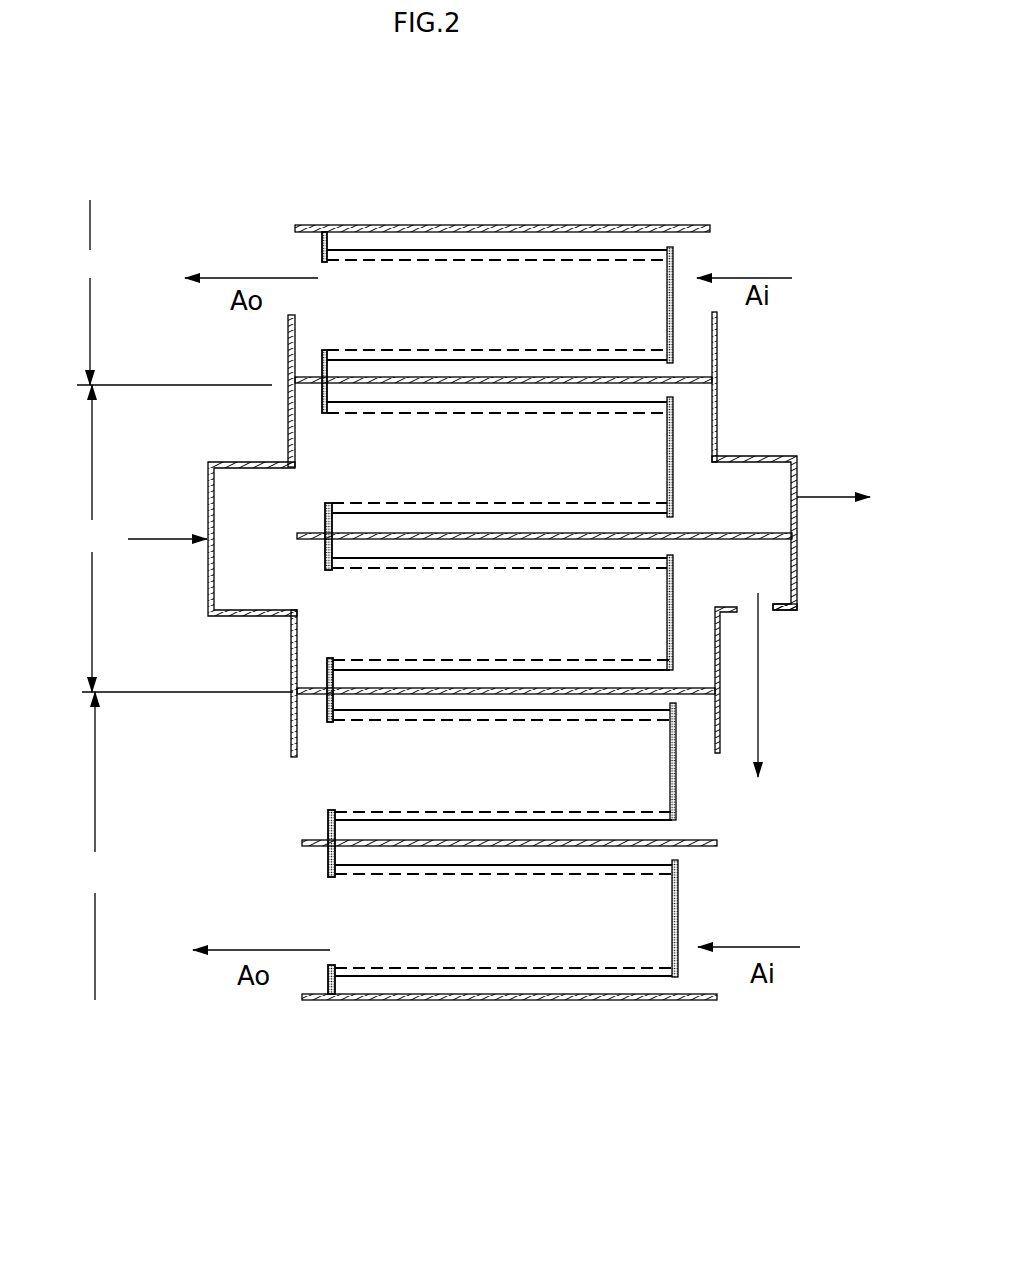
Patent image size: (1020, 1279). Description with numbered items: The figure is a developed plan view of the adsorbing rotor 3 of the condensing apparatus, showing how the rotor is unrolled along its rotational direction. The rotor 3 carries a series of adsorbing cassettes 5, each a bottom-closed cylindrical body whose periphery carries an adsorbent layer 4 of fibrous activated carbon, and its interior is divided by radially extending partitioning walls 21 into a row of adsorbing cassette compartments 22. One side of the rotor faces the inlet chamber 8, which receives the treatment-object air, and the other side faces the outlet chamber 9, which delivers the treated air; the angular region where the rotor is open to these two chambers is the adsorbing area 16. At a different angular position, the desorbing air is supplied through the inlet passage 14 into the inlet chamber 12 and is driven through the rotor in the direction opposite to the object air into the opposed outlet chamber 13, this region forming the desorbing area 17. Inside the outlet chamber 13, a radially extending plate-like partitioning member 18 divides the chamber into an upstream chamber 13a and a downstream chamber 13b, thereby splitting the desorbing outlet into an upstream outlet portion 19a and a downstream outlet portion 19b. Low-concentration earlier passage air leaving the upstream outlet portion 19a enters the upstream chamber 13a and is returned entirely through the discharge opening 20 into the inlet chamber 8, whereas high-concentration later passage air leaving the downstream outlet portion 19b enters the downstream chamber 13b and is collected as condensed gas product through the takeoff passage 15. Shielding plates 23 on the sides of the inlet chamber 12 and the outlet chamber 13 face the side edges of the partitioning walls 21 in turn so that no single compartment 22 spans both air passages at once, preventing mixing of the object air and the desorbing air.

The adsorbing rotor 3 is at (603, 1028).
The adsorbent layer 4 is at (563, 258).
The adsorbing cassette 5 is at (676, 267).
The inlet chamber 8 is at (833, 863).
The outlet chamber 9 is at (200, 868).
The inlet chamber 12 is at (250, 462).
The outlet chamber 13 is at (797, 610).
The upstream chamber 13a is at (757, 570).
The downstream chamber 13b is at (755, 492).
The inlet passage 14 is at (150, 543).
The takeoff passage 15 is at (813, 492).
The adsorbing area 16 is at (183, 600).
The desorbing area 17 is at (93, 538).
The partitioning member 18 is at (762, 542).
The upstream outlet portion 19a is at (711, 574).
The downstream outlet portion 19b is at (714, 496).
The discharge opening 20 is at (766, 613).
The partitioning wall 21 is at (546, 226).
The adsorbing cassette compartment 22 is at (502, 378).
The shielding plate 23 is at (290, 385).